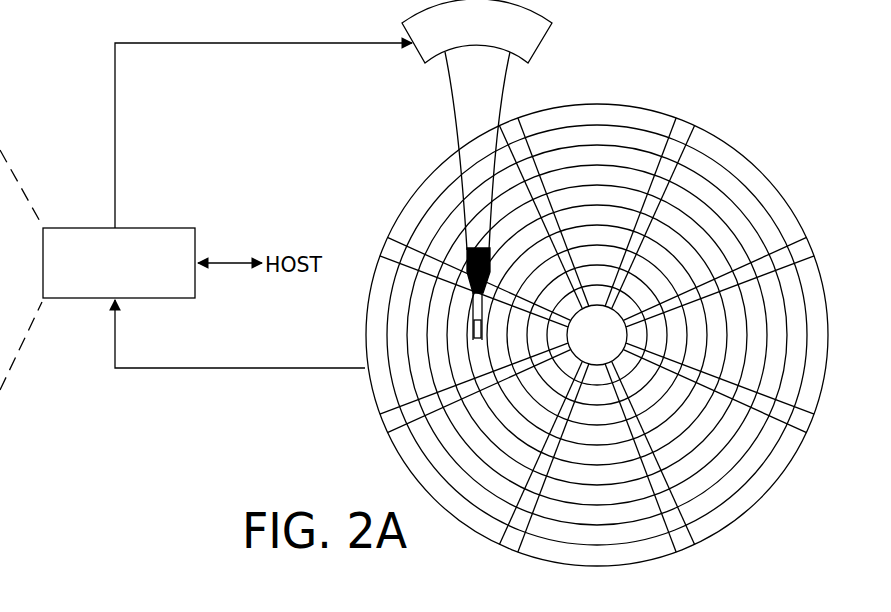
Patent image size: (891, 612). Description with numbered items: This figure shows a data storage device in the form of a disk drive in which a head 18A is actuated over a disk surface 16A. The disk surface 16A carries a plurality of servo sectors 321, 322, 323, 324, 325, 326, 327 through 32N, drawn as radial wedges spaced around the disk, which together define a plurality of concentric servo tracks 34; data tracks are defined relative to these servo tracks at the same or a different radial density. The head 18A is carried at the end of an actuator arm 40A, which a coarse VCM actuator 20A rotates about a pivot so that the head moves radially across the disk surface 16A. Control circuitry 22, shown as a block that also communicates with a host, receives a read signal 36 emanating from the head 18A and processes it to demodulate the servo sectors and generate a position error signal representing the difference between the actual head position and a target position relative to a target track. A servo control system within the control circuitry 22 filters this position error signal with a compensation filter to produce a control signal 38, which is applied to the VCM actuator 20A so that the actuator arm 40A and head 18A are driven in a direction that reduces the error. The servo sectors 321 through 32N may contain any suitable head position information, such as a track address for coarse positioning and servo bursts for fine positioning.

The disk surface 16A is at (599, 329).
The head 18A is at (472, 338).
The VCM actuator 20A is at (420, 48).
The control circuitry 22 is at (158, 228).
The servo tracks 34 is at (590, 130).
The read signal 36 is at (248, 370).
The control signal 38 is at (116, 128).
The actuator arm 40A is at (458, 132).
The servo sector 321 is at (687, 128).
The servo sector 322 is at (810, 250).
The servo sector 323 is at (806, 426).
The servo sector 324 is at (682, 550).
The servo sector 325 is at (508, 553).
The servo sector 326 is at (388, 414).
The servo sector 327 is at (388, 244).
The servo sector 32N is at (512, 128).